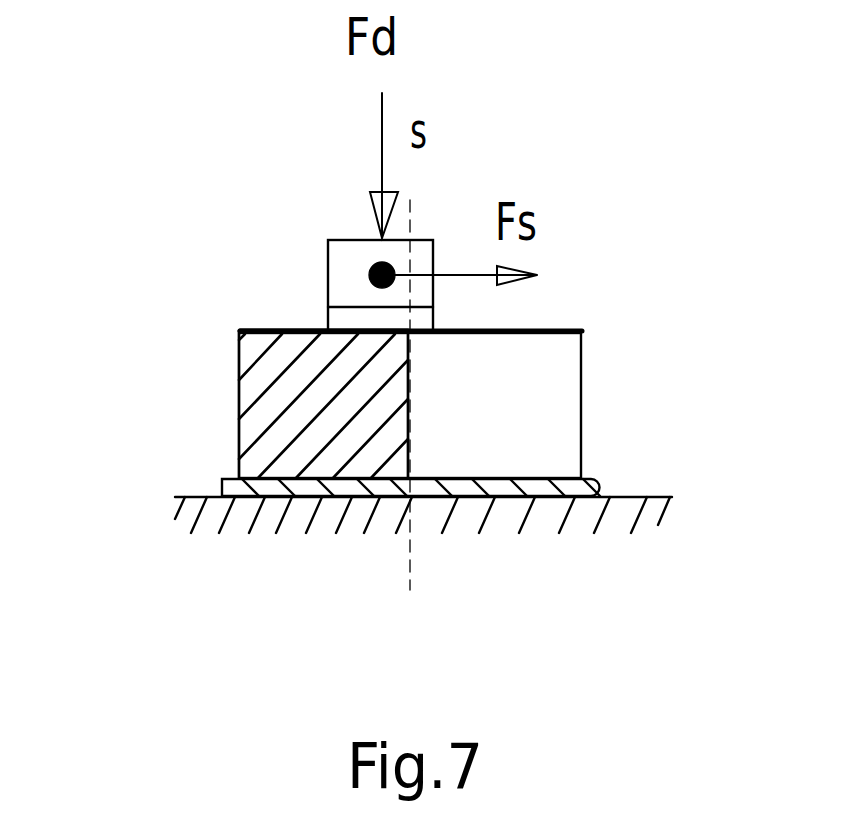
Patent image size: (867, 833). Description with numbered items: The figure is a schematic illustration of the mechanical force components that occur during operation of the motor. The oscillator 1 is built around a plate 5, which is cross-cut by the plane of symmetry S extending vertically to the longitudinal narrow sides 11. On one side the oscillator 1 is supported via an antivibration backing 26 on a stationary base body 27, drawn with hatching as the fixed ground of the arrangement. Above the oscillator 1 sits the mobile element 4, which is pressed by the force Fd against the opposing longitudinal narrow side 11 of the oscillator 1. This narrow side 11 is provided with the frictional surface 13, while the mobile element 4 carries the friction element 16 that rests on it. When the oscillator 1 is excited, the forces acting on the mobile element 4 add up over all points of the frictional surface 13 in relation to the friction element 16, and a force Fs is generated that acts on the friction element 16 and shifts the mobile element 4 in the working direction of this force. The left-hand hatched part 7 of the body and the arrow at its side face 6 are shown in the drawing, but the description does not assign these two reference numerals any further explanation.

The oscillator 1 is at (552, 307).
The mobile element 4 is at (433, 218).
The plate 5 is at (545, 363).
The side face 6 is at (240, 432).
The elastic block 7 is at (275, 410).
The longitudinal narrow side 11 is at (250, 315).
The frictional surface 13 is at (280, 329).
The friction element 16 is at (358, 317).
The antivibration backing 26 is at (582, 488).
The stationary base body 27 is at (612, 530).